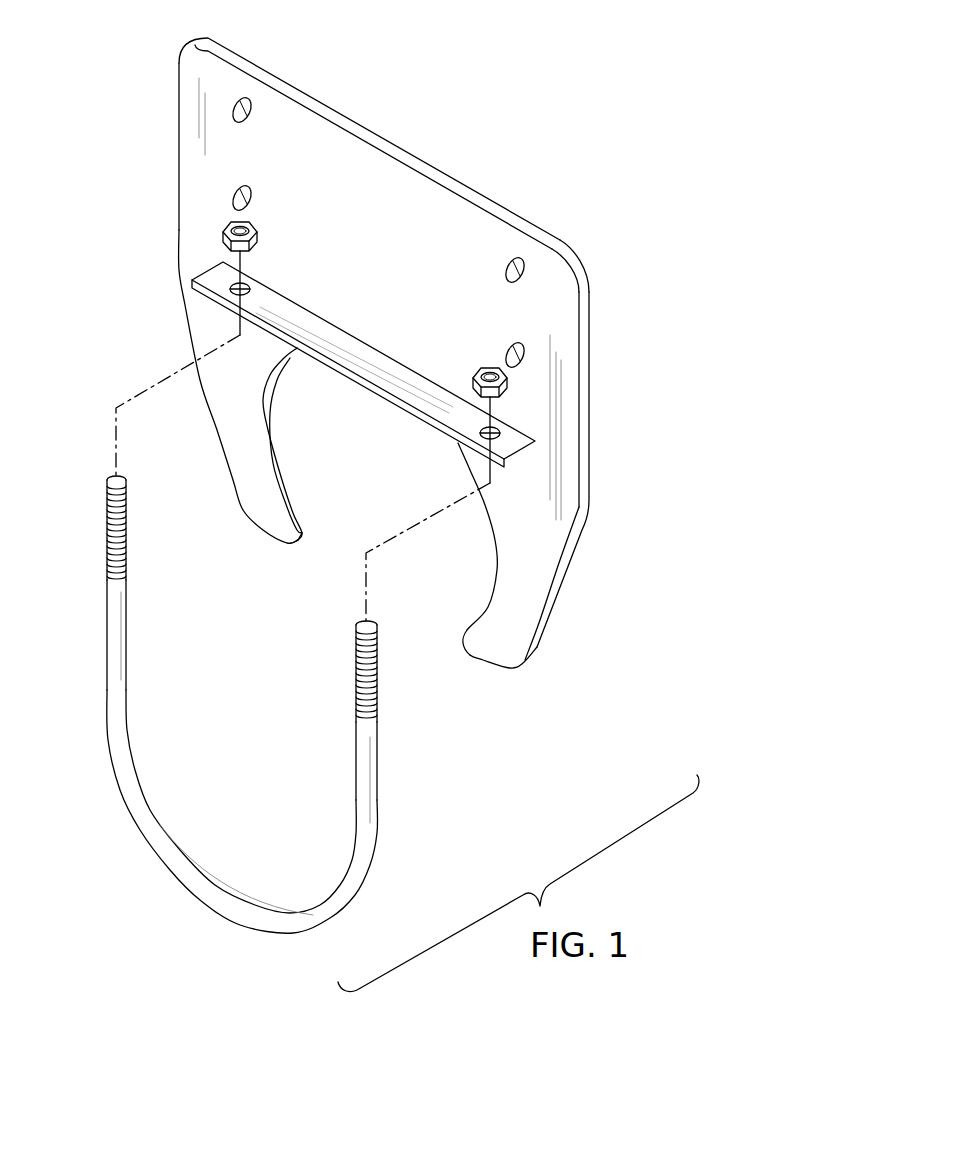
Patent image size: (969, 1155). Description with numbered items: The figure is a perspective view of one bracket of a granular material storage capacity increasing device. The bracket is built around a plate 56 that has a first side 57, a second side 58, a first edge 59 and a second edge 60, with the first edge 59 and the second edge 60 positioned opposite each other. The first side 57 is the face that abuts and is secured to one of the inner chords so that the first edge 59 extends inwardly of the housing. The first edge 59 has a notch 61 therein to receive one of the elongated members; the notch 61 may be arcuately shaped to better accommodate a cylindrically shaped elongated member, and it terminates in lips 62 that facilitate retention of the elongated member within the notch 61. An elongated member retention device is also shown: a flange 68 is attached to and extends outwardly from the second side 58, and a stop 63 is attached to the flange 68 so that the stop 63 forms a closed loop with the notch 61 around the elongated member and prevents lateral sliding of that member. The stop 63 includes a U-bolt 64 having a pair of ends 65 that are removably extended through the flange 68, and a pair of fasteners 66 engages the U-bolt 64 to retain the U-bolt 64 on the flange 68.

The plate 56 is at (577, 262).
The first side 57 is at (592, 342).
The second side 58 is at (557, 365).
The first edge 59 is at (480, 657).
The second edge 60 is at (407, 155).
The notch 61 is at (268, 415).
The lips 62 is at (300, 543).
The stop 63 is at (207, 700).
The U-bolt 64 is at (122, 758).
The ends 65 is at (108, 478).
The fasteners 66 is at (223, 237).
The flange 68 is at (537, 447).